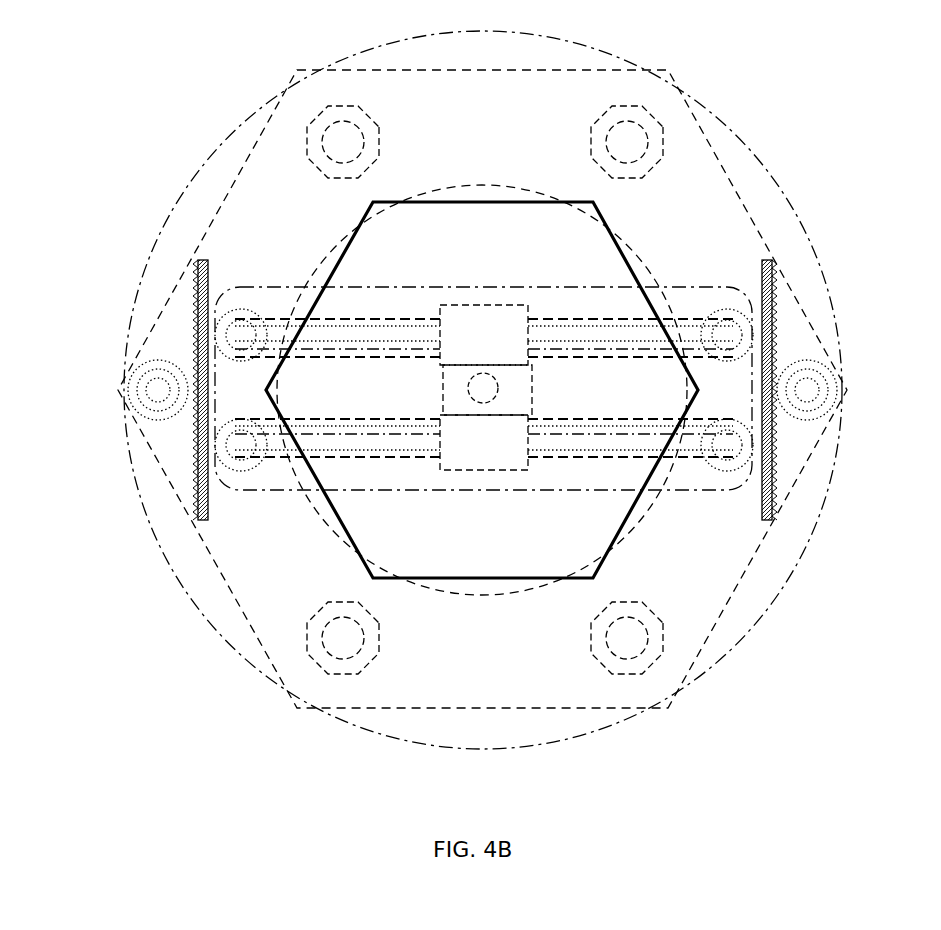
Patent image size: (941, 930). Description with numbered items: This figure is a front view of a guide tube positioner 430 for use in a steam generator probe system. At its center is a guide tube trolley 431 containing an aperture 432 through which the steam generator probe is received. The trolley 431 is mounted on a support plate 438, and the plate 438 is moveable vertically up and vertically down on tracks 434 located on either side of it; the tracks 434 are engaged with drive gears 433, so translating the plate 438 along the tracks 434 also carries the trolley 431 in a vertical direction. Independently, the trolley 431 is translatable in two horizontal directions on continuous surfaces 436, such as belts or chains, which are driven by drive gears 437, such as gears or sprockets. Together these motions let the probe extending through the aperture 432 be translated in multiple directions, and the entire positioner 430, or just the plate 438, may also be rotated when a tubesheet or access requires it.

The guide tube positioner 430 is at (265, 56).
The guide tube trolley 431 is at (482, 303).
The aperture 432 is at (498, 379).
The drive gears 433 is at (152, 362).
The tracks 434 is at (193, 295).
The continuous surfaces 436 is at (543, 318).
The drive gears 437 is at (245, 303).
The support plate 438 is at (399, 287).